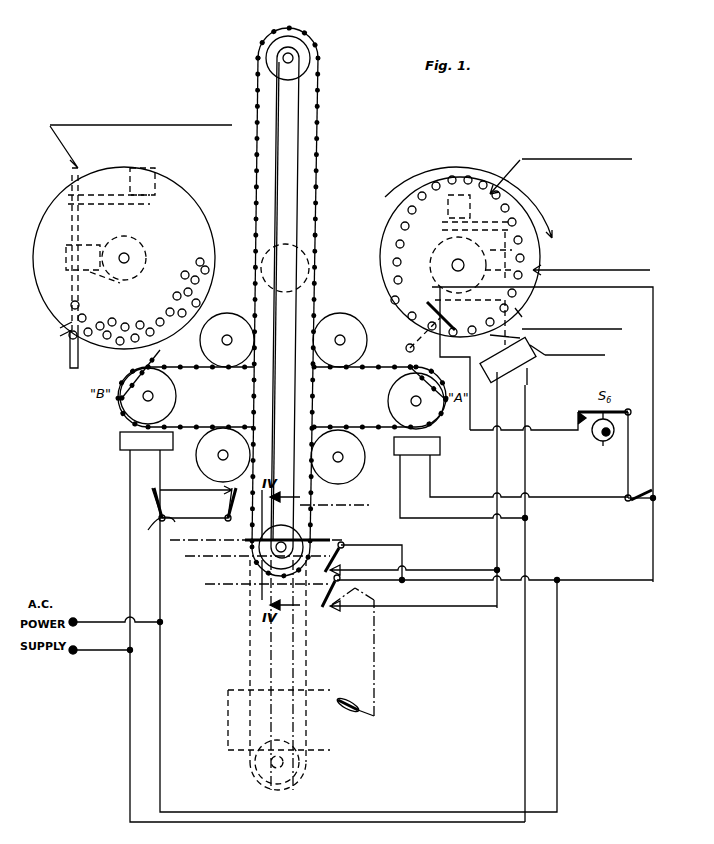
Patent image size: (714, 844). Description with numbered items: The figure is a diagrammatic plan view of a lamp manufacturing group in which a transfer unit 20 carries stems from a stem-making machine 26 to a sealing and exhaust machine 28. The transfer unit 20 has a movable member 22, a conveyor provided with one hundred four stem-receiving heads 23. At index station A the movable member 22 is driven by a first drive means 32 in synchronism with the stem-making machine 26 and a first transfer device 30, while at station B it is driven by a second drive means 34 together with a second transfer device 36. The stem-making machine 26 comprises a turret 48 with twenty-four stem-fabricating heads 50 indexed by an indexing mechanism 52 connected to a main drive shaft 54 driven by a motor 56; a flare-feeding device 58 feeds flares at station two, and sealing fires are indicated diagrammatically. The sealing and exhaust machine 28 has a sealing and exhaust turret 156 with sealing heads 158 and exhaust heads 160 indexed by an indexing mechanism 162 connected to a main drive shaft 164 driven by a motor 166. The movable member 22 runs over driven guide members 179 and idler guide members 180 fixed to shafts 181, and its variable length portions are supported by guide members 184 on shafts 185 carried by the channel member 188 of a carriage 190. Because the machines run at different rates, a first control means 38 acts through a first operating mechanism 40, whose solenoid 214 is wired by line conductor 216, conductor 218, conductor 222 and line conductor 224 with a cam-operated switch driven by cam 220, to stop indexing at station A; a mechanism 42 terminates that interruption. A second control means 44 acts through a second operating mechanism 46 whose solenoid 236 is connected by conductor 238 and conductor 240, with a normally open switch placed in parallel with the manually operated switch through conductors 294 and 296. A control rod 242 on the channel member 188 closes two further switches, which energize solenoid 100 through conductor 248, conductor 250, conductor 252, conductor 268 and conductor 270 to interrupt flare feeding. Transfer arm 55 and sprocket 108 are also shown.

The transfer unit 20 is at (282, 409).
The movable member 22 is at (256, 140).
The stem-receiving heads 23 is at (316, 180).
The stem-making machine 26 is at (505, 299).
The sealing and exhaust machine 28 is at (126, 240).
The first transfer device 30 is at (412, 344).
The first drive means 32 is at (440, 420).
The second drive means 34 is at (112, 405).
The second transfer device 36 is at (150, 354).
The first control means 38 is at (350, 546).
The first operating mechanism 40 is at (450, 455).
The mechanism for terminating the interruption 42 is at (355, 714).
The second control means 44 is at (228, 520).
The second operating mechanism 46 is at (110, 444).
The turret 48 is at (530, 204).
The stem-fabricating heads 50 is at (418, 225).
The indexing mechanism 52 is at (540, 262).
The main drive shaft 54 is at (545, 225).
The transfer arm 55 is at (445, 313).
The motor 56 is at (472, 190).
The flare-feeding device 58 is at (582, 349).
The solenoid 100 is at (510, 472).
The sprocket 108 is at (374, 400).
The sealing and exhaust turret 156 is at (36, 283).
The sealing heads 158 is at (150, 315).
The exhaust heads 160 is at (60, 330).
The indexing mechanism 162 is at (44, 236).
The main drive shaft 164 is at (70, 350).
The motor 166 is at (150, 168).
The driven guide members 179 is at (172, 382).
The idler guide members 180 is at (322, 347).
The shafts 181 is at (145, 397).
The guide members 184 is at (306, 58).
The shafts 185 is at (283, 58).
The channel member 188 is at (290, 112).
The carriage 190 is at (272, 100).
The solenoid 214 is at (432, 462).
The line conductor 216 is at (653, 372).
The conductor 218 is at (552, 430).
The cam 220 is at (592, 436).
The conductor 222 is at (626, 484).
The line conductor 224 is at (125, 690).
The solenoid 236 is at (120, 450).
The conductor 238 is at (130, 556).
The conductor 240 is at (160, 462).
The control rod 242 is at (248, 555).
The conductor 248 is at (490, 570).
The conductor 250 is at (527, 398).
The conductor 252 is at (402, 545).
The conductor 268 is at (368, 582).
The conductor 270 is at (452, 610).
The conductor 294 is at (210, 490).
The conductor 296 is at (151, 535).